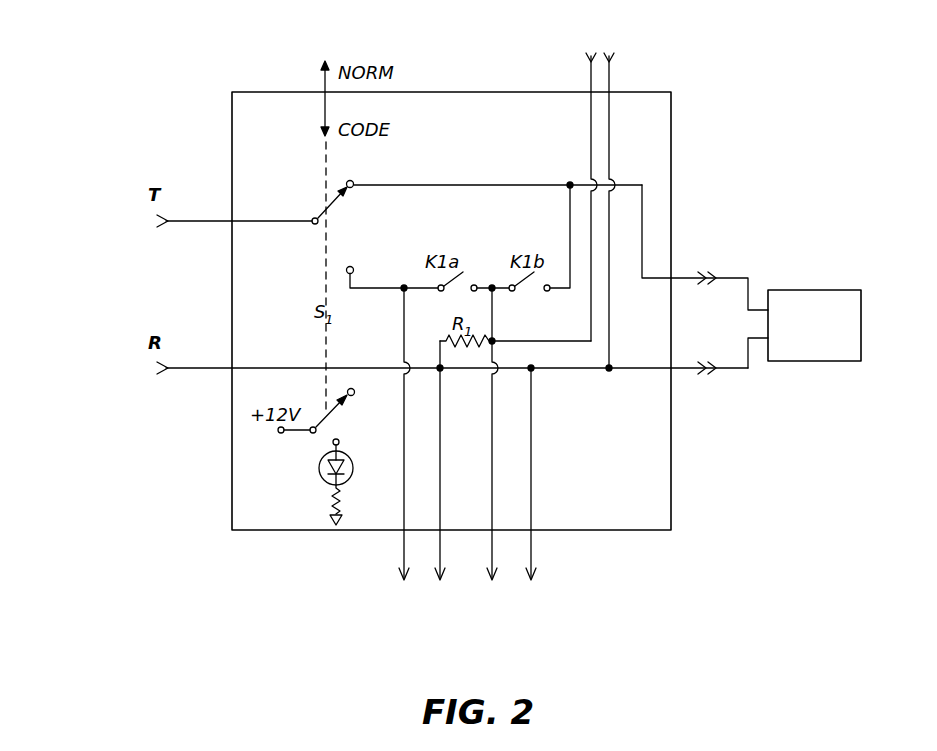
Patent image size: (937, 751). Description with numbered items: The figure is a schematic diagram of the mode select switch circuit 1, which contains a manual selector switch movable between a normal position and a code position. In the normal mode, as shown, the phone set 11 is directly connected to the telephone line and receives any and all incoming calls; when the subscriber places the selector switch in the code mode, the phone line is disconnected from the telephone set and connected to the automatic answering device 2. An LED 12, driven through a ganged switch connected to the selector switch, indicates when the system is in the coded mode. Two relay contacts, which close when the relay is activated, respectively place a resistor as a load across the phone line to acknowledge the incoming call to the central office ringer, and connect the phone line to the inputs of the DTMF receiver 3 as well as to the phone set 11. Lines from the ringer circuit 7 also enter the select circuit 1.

The mode select switch circuit 1 is at (671, 478).
The automatic answering device 2 is at (424, 476).
The DTMF receiver 3 is at (551, 476).
The ringer circuit 7 is at (598, 187).
The phone set 11 is at (800, 290).
The LED 12 is at (307, 482).